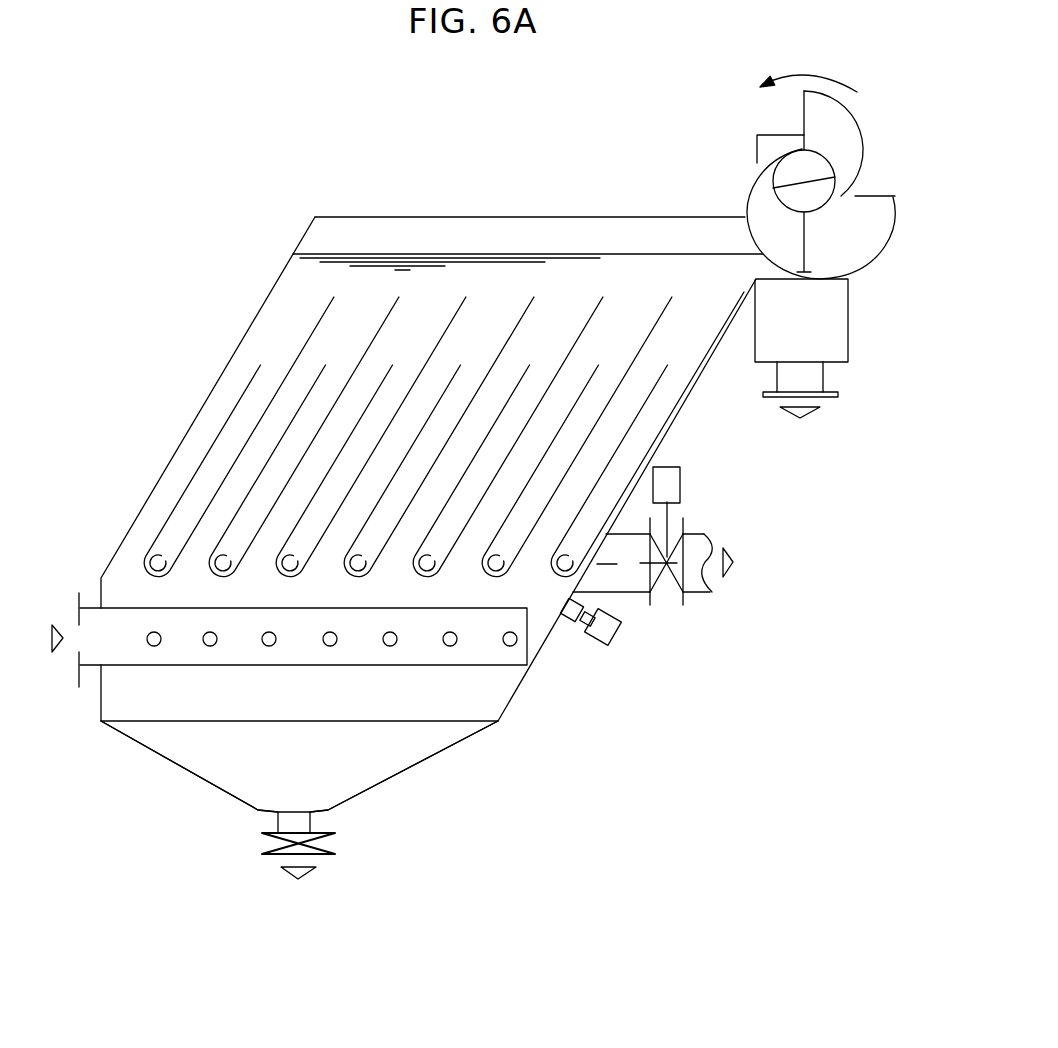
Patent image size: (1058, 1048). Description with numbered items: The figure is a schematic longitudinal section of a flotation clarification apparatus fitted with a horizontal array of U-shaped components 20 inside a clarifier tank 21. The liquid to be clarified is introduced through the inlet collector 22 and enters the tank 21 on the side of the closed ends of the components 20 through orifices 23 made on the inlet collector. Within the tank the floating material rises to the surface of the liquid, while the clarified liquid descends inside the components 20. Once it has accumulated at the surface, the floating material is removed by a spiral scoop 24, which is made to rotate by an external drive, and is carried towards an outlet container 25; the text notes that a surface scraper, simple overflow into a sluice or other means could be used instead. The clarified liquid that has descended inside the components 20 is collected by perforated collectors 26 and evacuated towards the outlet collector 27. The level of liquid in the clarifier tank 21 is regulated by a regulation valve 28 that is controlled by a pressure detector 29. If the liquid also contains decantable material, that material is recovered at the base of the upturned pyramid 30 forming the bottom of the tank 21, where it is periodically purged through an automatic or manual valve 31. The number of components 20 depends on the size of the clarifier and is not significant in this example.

The U-shaped component 20 is at (283, 437).
The clarifier tank 21 is at (223, 372).
The inlet collector 22 is at (125, 668).
The orifices 23 is at (160, 645).
The spiral scoop 24 is at (745, 187).
The outlet container 25 is at (780, 343).
The perforated collectors 26 is at (223, 562).
The outlet collector 27 is at (697, 583).
The regulation valve 28 is at (667, 578).
The pressure detector 29 is at (610, 625).
The upturned pyramid 30 is at (250, 797).
The valve 31 is at (317, 842).